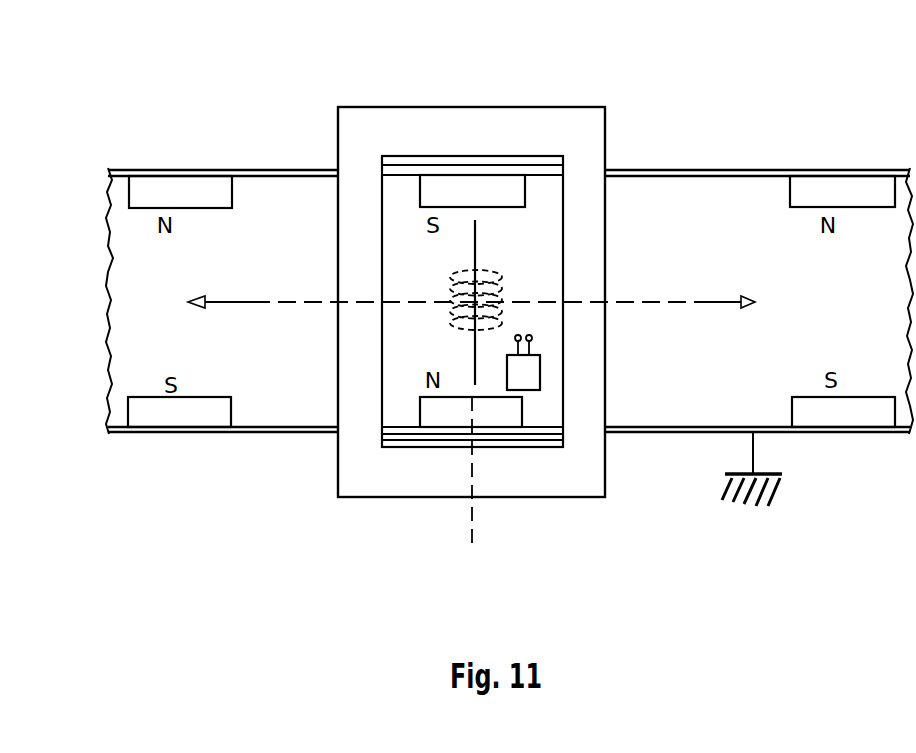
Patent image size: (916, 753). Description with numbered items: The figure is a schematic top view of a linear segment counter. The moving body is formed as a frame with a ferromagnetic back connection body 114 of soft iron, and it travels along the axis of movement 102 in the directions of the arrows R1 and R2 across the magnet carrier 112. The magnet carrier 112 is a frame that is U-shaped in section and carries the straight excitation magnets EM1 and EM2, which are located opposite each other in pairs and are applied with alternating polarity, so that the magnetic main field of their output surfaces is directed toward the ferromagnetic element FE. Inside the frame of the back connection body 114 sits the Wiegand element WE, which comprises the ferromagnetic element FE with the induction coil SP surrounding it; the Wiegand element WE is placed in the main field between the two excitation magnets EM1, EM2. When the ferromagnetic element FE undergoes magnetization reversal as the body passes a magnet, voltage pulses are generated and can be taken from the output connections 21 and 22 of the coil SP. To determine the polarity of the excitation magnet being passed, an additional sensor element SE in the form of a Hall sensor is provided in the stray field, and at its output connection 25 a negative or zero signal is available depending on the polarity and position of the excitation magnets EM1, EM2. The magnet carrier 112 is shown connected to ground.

The back connection body 114 is at (536, 133).
The Wiegand element WE is at (533, 238).
The excitation magnet EM1 is at (183, 192).
The excitation magnet EM2 is at (187, 410).
The ferromagnetic element FE is at (477, 258).
The Wiegand coil SP is at (490, 288).
The output connection of Wiegand coil 21 is at (473, 272).
The output connection of Wiegand coil 22 is at (472, 336).
The additional sensor element SE is at (527, 375).
The output connection of the Hall sensor 25 is at (526, 331).
The axis of movement 102 is at (648, 302).
The arrow R1 is at (203, 303).
The arrow R2 is at (747, 303).
The magnet carrier 112 is at (708, 405).